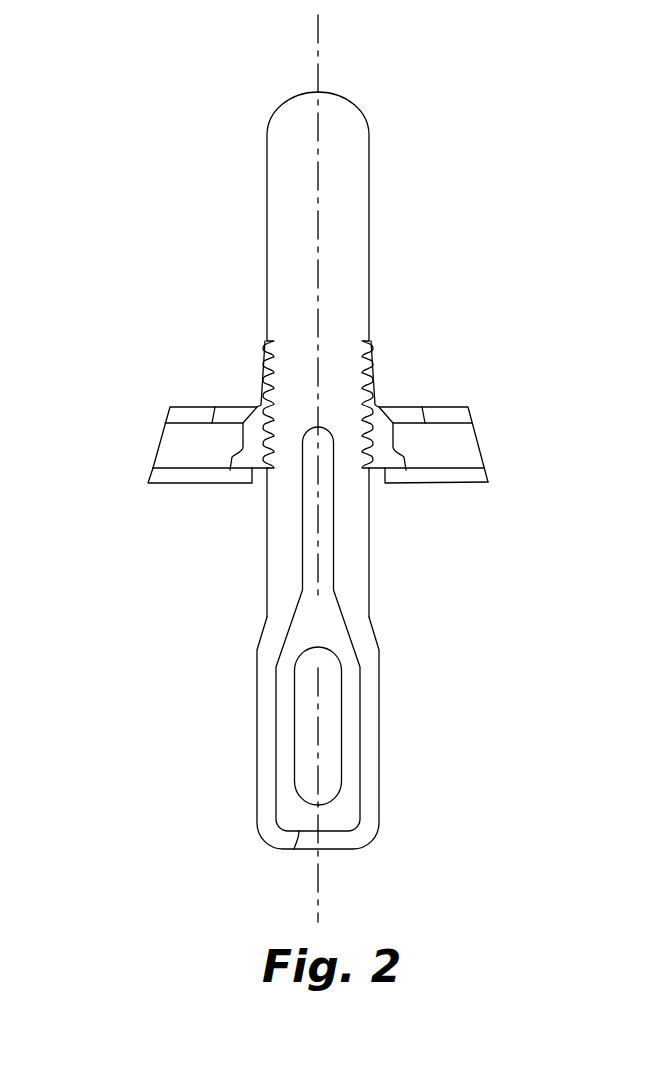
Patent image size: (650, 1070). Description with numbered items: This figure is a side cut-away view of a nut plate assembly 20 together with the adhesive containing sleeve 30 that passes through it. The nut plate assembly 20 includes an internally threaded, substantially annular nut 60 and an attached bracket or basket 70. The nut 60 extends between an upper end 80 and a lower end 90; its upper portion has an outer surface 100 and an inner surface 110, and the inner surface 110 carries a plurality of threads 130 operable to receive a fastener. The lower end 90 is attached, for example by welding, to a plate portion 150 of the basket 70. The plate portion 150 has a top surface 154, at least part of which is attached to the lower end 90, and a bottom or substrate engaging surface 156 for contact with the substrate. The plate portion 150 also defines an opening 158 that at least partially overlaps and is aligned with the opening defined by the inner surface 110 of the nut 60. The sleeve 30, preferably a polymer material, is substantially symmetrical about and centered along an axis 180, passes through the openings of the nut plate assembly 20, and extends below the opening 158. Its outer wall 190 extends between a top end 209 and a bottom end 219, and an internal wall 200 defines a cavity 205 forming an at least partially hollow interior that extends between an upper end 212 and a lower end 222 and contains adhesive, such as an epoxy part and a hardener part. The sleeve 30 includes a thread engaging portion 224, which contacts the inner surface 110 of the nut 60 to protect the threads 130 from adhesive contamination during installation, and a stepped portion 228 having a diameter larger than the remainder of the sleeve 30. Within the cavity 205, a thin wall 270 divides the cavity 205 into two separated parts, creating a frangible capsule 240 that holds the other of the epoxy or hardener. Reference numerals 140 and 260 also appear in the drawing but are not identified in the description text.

The nut plate assembly 20 is at (492, 371).
The adhesive containing sleeve 30 is at (367, 127).
The nut 60 is at (246, 394).
The basket 70 is at (153, 448).
The upper end 80 is at (371, 341).
The lower end 90 is at (409, 456).
The outer surface 100 is at (387, 378).
The inner surface 110 is at (358, 344).
The threads 130 is at (265, 363).
The nut lower face 140 is at (377, 470).
The plate portion 150 is at (170, 458).
The top surface 154 is at (470, 465).
The substrate engaging surface 156 is at (473, 485).
The opening 158 is at (268, 473).
The axis 180 is at (320, 38).
The outer wall 190 is at (380, 790).
The internal wall 200 is at (306, 532).
The cavity 205 is at (336, 636).
The top end 209 is at (292, 98).
The upper end 212 is at (323, 426).
The bottom end 219 is at (365, 850).
The lower end 222 is at (290, 849).
The thread engaging portion 224 is at (288, 336).
The stepped portion 228 is at (239, 652).
The capsule 240 is at (303, 752).
The inner loop wall 260 is at (353, 628).
The thin wall 270 is at (343, 735).